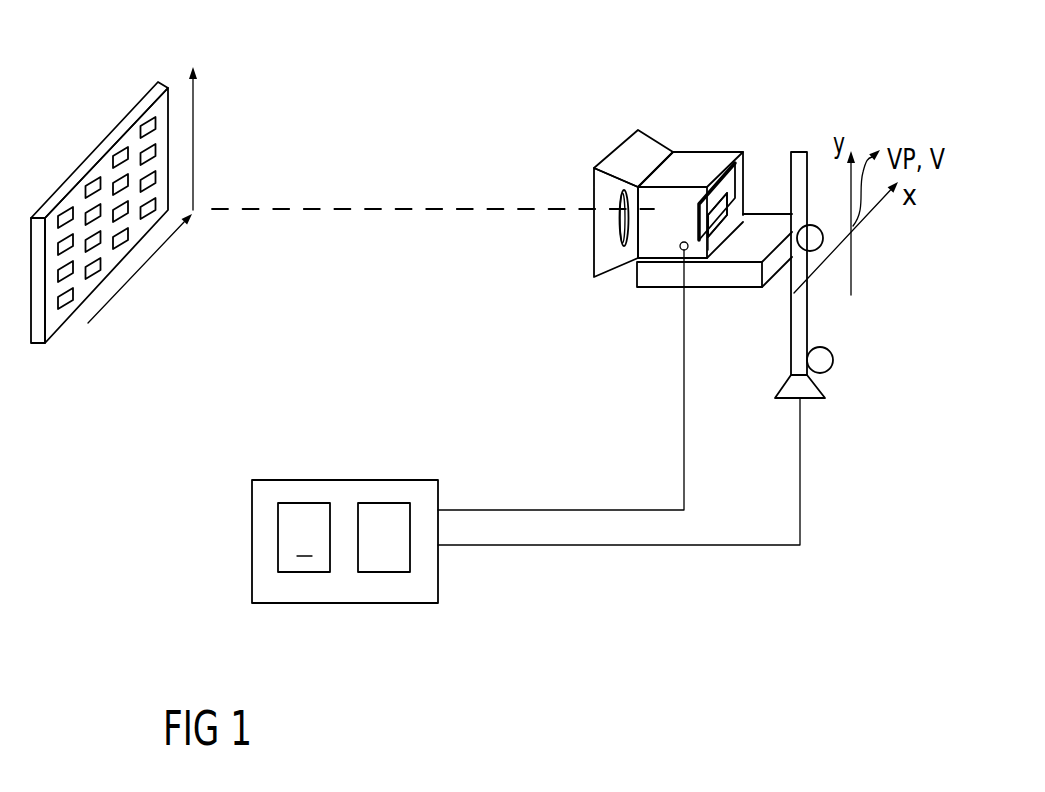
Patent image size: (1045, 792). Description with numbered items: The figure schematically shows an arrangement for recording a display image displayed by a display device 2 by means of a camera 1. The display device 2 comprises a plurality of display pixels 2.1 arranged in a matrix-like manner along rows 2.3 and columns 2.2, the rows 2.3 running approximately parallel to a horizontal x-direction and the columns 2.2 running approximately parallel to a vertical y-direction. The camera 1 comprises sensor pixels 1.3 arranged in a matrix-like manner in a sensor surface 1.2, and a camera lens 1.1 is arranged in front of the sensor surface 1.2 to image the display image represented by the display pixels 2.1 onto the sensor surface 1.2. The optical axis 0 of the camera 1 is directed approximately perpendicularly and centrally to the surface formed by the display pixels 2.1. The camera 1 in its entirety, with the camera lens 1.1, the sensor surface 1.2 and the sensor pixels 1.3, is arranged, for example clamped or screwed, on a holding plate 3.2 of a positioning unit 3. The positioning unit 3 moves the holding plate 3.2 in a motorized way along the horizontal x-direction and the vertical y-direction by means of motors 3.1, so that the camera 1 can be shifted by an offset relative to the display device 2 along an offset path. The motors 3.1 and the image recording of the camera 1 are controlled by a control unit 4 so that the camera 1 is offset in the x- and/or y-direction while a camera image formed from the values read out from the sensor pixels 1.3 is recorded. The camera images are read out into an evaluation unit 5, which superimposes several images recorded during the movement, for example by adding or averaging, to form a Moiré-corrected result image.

The optical axis 0 is at (402, 208).
The camera 1 is at (680, 122).
The camera lens 1.1 is at (620, 222).
The sensor surface 1.2 is at (717, 217).
The sensor pixels 1.3 is at (717, 215).
The display device 2 is at (79, 124).
The display pixels 2.1 is at (145, 122).
The columns 2.2 is at (231, 134).
The rows 2.3 is at (172, 268).
The positioning unit 3 is at (812, 415).
The motors 3.1 is at (812, 242).
The holding plate 3.2 is at (760, 214).
The control unit 4 is at (392, 556).
The evaluation unit 5 is at (345, 488).